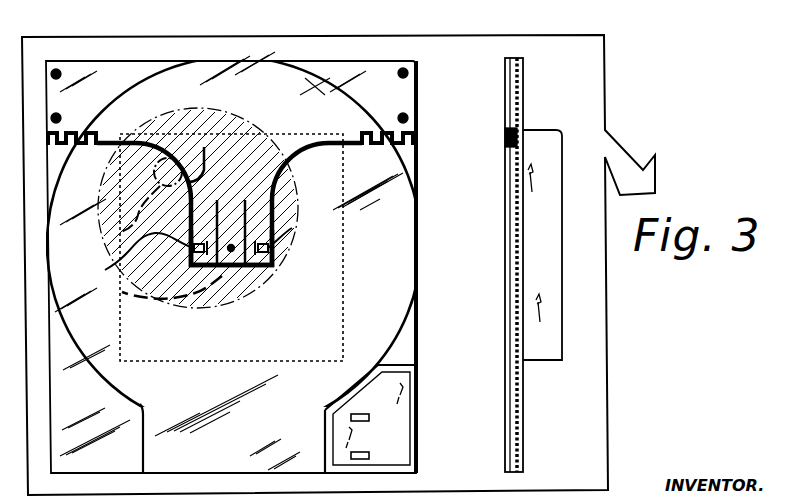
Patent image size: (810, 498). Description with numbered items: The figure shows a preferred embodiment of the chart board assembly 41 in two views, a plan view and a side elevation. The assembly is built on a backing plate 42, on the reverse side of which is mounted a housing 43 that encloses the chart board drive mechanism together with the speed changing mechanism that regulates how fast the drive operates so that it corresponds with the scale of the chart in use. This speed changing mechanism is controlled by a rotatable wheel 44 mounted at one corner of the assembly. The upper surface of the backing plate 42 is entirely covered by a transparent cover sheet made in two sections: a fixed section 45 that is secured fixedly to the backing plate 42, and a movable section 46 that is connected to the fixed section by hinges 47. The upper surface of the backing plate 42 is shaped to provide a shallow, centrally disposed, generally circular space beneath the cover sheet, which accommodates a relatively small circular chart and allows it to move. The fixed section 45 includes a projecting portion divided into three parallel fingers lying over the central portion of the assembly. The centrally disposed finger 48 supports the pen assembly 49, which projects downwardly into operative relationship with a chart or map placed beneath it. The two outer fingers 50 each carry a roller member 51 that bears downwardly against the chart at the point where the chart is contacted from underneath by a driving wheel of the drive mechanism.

The chart board assembly 41 is at (503, 100).
The backing plate 42 is at (344, 269).
The housing 43 is at (552, 225).
The rotatable wheel 44 is at (378, 470).
The fixed section of transparent cover sheet 45 is at (395, 104).
The movable section of transparent cover sheet 46 is at (397, 277).
The hinges 47 is at (48, 143).
The centrally disposed finger 48 is at (239, 267).
The pen assembly 49 is at (222, 276).
The outer fingers 50 is at (155, 232).
The roller member 51 is at (124, 268).